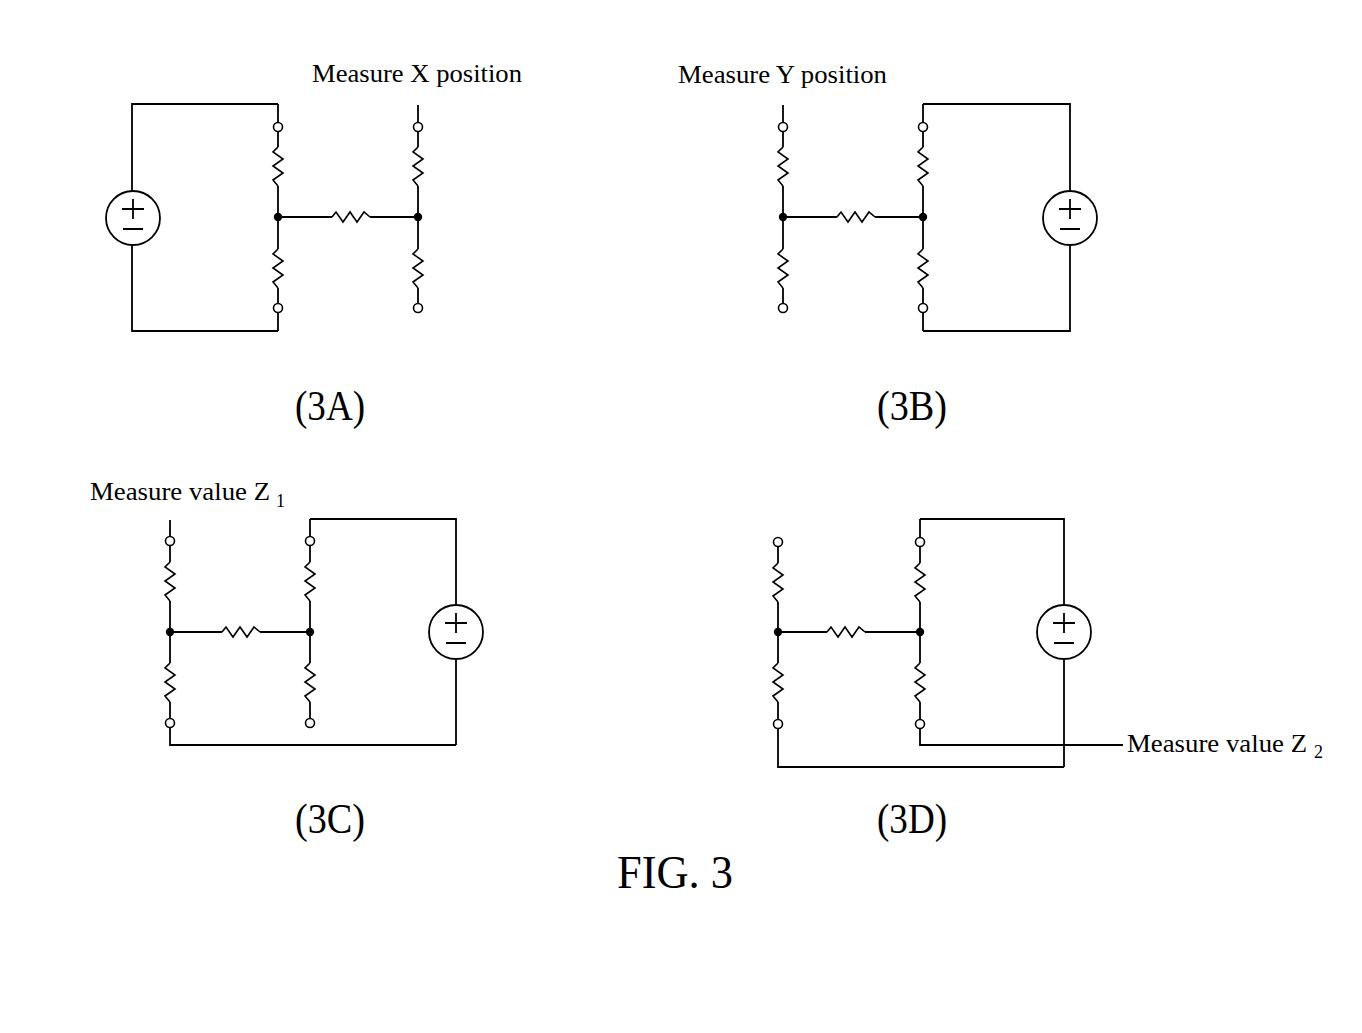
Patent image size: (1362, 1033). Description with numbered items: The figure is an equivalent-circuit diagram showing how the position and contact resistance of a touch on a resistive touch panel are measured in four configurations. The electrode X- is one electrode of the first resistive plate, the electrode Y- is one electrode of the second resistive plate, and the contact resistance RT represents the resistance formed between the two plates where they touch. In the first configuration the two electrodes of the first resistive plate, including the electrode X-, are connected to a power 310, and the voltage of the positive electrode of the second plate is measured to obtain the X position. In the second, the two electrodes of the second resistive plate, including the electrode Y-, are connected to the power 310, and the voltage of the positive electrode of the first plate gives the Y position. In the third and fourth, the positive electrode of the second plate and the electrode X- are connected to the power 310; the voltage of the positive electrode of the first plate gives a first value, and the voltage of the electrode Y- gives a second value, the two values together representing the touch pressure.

The power 310 is at (599, 409).
The contact resistance RT is at (548, 408).
The electrode X− X- is at (496, 514).
The electrode Y− Y- is at (636, 514).